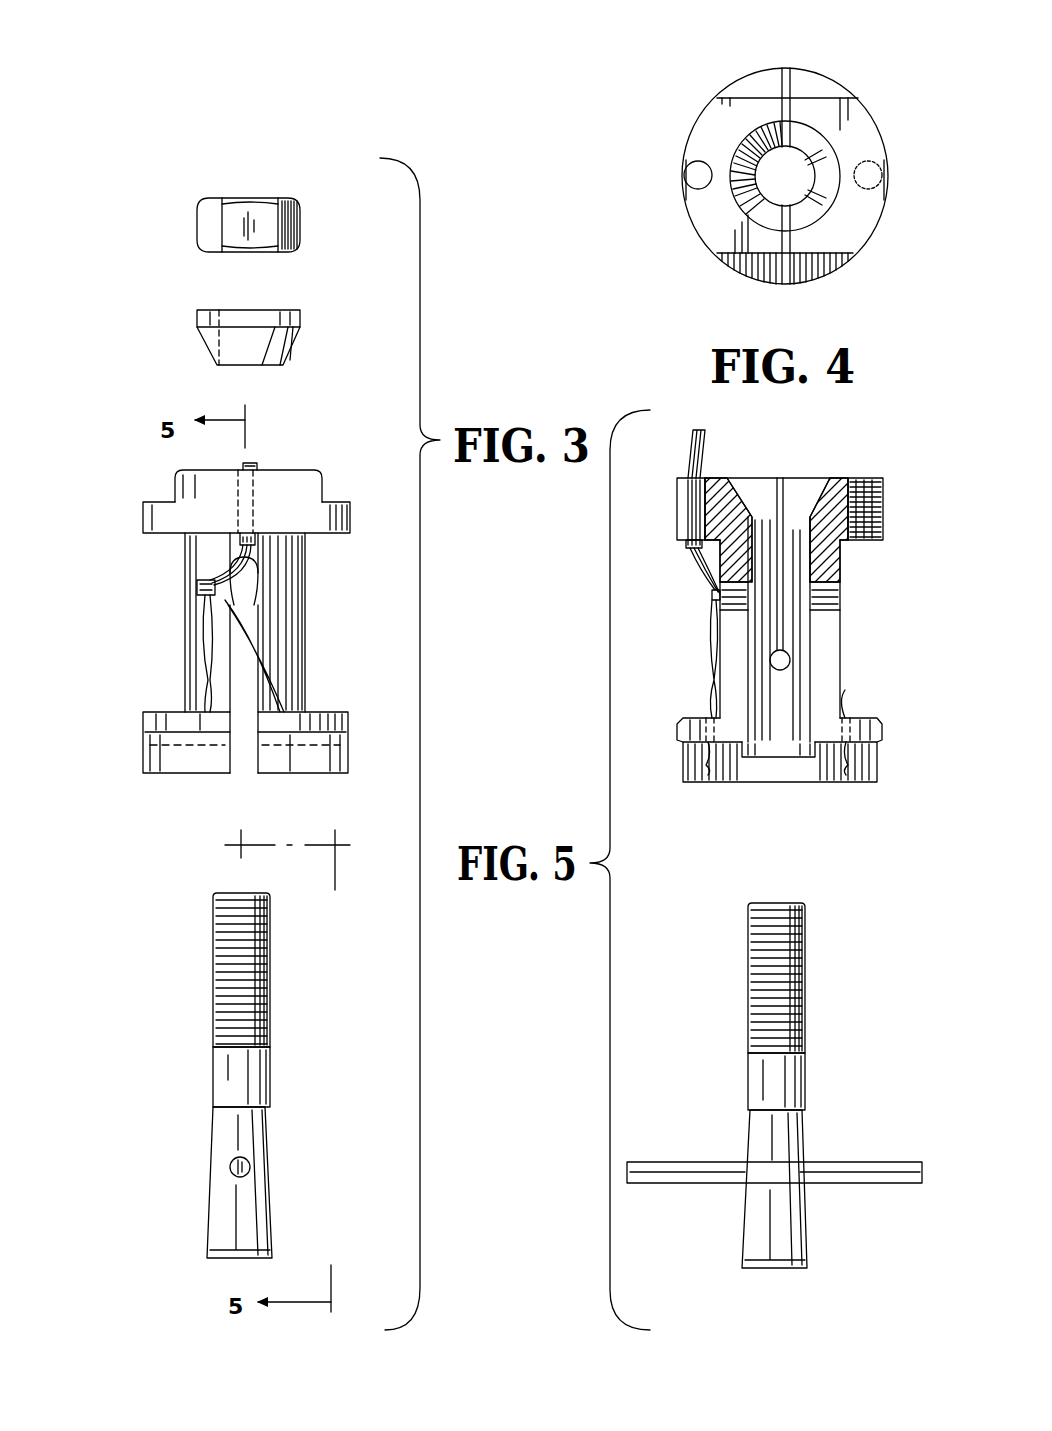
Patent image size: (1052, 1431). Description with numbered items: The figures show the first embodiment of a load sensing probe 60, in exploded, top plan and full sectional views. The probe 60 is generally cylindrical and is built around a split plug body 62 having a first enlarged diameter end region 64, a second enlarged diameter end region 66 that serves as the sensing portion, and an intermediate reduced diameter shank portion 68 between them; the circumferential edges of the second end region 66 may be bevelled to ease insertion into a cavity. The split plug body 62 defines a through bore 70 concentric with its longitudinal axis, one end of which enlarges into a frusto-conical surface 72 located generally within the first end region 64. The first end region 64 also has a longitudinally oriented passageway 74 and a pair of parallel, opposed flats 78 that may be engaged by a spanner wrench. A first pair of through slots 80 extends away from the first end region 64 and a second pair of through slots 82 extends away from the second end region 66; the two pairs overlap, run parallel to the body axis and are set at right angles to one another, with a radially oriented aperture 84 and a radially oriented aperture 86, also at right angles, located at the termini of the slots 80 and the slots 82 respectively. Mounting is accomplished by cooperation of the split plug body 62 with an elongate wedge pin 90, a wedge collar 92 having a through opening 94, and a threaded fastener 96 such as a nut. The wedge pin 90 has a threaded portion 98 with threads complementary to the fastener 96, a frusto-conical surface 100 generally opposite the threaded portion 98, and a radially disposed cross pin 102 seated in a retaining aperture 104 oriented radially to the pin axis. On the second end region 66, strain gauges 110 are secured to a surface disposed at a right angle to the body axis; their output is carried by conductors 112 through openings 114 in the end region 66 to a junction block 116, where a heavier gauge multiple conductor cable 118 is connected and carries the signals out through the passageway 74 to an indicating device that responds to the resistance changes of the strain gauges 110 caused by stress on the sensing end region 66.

In FIG. 3, the load sensing probe 60 is at (95, 185).
In FIG. 3, the split plug body 62 is at (211, 629).
In FIG. 5, the split plug body 62 is at (780, 627).
In FIG. 5, the first enlarged diameter end region 64 is at (883, 525).
In FIG. 5, the second enlarged diameter end region 66 is at (690, 725).
In FIG. 5, the intermediate reduced diameter shank portion 68 is at (838, 628).
In FIG. 5, the through bore 70 is at (760, 760).
In FIG. 4, the frusto-conical surface 72 is at (828, 165).
In FIG. 5, the frusto-conical surface 72 is at (812, 480).
In FIG. 4, the passageway 74 is at (697, 175).
In FIG. 5, the passageway 74 is at (700, 485).
In FIG. 3, the flats 78 is at (175, 480).
In FIG. 4, the flats 78 is at (790, 100).
In FIG. 5, the flats 78 is at (776, 530).
In FIG. 4, the first pair of through slots 80 is at (786, 176).
In FIG. 5, the first pair of through slots 80 is at (780, 490).
In FIG. 3, the second pair of through slots 82 is at (240, 760).
In FIG. 5, the radially oriented aperture 84 is at (790, 660).
In FIG. 3, the radially oriented aperture 86 is at (262, 590).
In FIG. 3, the elongate wedge pin 90 is at (218, 1070).
In FIG. 5, the elongate wedge pin 90 is at (762, 1076).
In FIG. 3, the wedge collar 92 is at (205, 338).
In FIG. 3, the through opening 94 is at (265, 322).
In FIG. 3, the threaded fastener 96 is at (290, 215).
In FIG. 3, the threaded portion 98 is at (258, 997).
In FIG. 5, the threaded portion 98 is at (805, 1002).
In FIG. 3, the frusto-conical surface 100 is at (258, 1137).
In FIG. 5, the frusto-conical surface 100 is at (785, 1160).
In FIG. 3, the cross pin 102 is at (230, 1167).
In FIG. 5, the cross pin 102 is at (690, 1162).
In FIG. 3, the retaining aperture 104 is at (250, 1167).
In FIG. 5, the strain gauges 110 is at (708, 770).
In FIG. 3, the conductors 112 is at (205, 660).
In FIG. 5, the conductors 112 is at (710, 655).
In FIG. 3, the openings 114 is at (145, 745).
In FIG. 5, the openings 114 is at (705, 728).
In FIG. 3, the junction block 116 is at (197, 588).
In FIG. 5, the junction block 116 is at (712, 596).
In FIG. 3, the multiple conductor cable 118 is at (240, 540).
In FIG. 5, the multiple conductor cable 118 is at (686, 548).